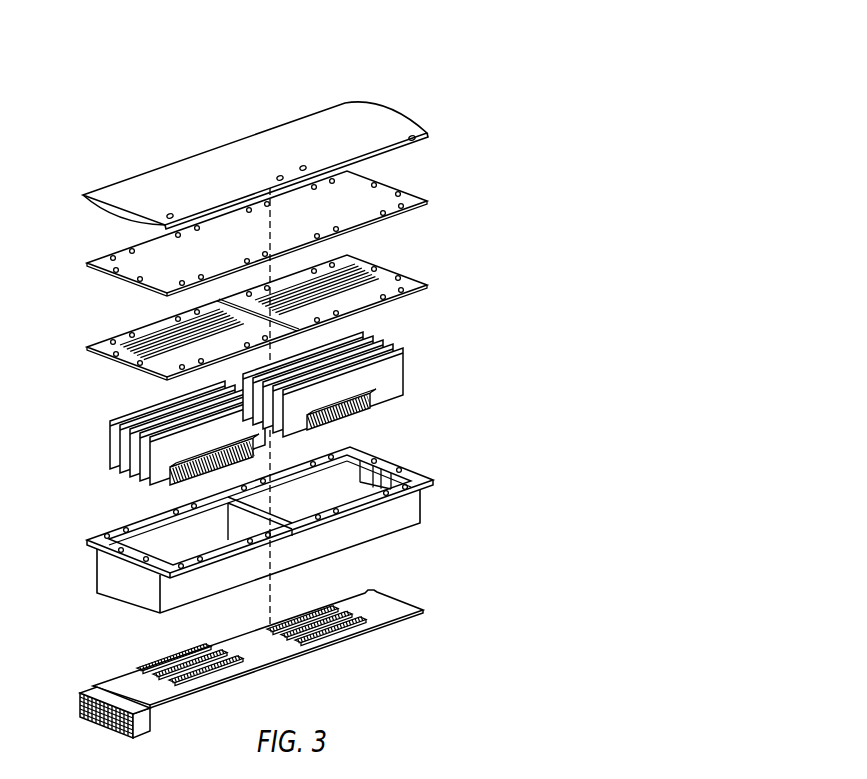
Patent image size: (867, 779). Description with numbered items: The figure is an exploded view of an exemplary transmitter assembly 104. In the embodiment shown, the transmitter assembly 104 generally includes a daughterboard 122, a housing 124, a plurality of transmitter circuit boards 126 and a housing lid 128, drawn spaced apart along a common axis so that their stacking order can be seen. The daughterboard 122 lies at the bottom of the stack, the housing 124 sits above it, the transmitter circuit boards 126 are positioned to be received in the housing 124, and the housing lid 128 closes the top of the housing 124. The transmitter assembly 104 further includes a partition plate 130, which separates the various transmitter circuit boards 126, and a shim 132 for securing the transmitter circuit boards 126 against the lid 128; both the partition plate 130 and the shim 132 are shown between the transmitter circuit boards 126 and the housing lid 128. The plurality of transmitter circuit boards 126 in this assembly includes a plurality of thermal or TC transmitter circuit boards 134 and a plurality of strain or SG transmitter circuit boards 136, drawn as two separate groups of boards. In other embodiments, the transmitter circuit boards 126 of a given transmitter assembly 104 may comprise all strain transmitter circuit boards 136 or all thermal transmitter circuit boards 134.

The transmitter assembly 104 is at (280, 370).
The daughterboard 122 is at (440, 605).
The housing 124 is at (455, 463).
The transmitter circuit boards 126 is at (280, 396).
The housing lid 128 is at (471, 13).
The partition plate 130 is at (420, 273).
The shim 132 is at (417, 183).
The thermal (TC) transmitter circuit boards 134 is at (103, 452).
The strain (SG) transmitter circuit boards 136 is at (398, 343).